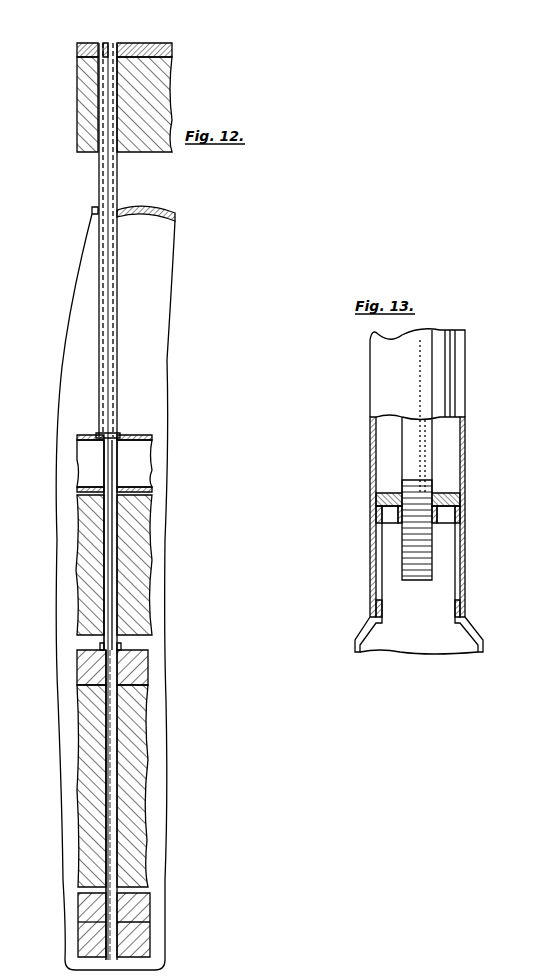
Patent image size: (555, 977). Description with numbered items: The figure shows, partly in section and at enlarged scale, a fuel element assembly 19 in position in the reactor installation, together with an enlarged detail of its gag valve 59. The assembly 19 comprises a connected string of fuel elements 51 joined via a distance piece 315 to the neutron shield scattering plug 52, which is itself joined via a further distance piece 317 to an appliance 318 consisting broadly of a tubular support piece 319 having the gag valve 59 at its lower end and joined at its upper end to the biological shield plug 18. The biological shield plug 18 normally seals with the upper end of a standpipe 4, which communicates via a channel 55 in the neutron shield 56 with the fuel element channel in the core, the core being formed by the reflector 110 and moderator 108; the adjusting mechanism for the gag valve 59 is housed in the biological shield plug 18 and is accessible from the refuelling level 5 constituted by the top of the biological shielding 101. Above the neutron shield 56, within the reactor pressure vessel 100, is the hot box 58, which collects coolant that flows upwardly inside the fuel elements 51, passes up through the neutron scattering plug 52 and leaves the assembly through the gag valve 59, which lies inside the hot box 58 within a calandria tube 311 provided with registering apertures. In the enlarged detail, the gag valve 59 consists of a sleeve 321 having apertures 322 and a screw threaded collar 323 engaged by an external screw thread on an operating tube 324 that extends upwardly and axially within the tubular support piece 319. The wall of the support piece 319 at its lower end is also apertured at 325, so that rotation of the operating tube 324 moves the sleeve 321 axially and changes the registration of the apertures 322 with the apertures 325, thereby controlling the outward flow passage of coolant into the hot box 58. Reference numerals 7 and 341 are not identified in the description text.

In FIG. 12, the standpipe 4 is at (119, 290).
In FIG. 12, the refuelling level 5 is at (150, 43).
In FIG. 12, the rod 7 is at (118, 765).
In FIG. 12, the biological shield plug 18 is at (108, 48).
In FIG. 12, the fuel element assembly 19 is at (112, 565).
In FIG. 12, the fuel elements 51 is at (110, 735).
In FIG. 12, the neutron shield plug 52 is at (110, 508).
In FIG. 12, the channel 55 is at (122, 540).
In FIG. 12, the neutron shield 56 is at (88, 522).
In FIG. 12, the hot box 58 is at (150, 446).
In FIG. 12, the gag valve 59 is at (101, 436).
In FIG. 13, the gag valve 59 is at (466, 558).
In FIG. 12, the reactor pressure vessel 100 is at (166, 210).
In FIG. 12, the biological shielding 101 is at (80, 96).
In FIG. 12, the moderator 108 is at (135, 707).
In FIG. 12, the reflector 110 is at (138, 670).
In FIG. 12, the calandria tubes 311 is at (118, 465).
In FIG. 12, the distance piece 315 is at (110, 670).
In FIG. 12, the distance piece 317 is at (112, 473).
In FIG. 13, the distance piece 317 is at (474, 636).
In FIG. 12, the appliance 318 is at (119, 341).
In FIG. 12, the tubular support piece 319 is at (111, 330).
In FIG. 13, the tubular support piece 319 is at (464, 460).
In FIG. 13, the sleeve 321 is at (458, 520).
In FIG. 13, the apertures 322 is at (378, 572).
In FIG. 13, the screw threaded collar 323 is at (398, 520).
In FIG. 13, the operating tube 324 is at (412, 444).
In FIG. 13, the apertures 325 is at (373, 545).
In FIG. 12, the plate 341 is at (90, 440).